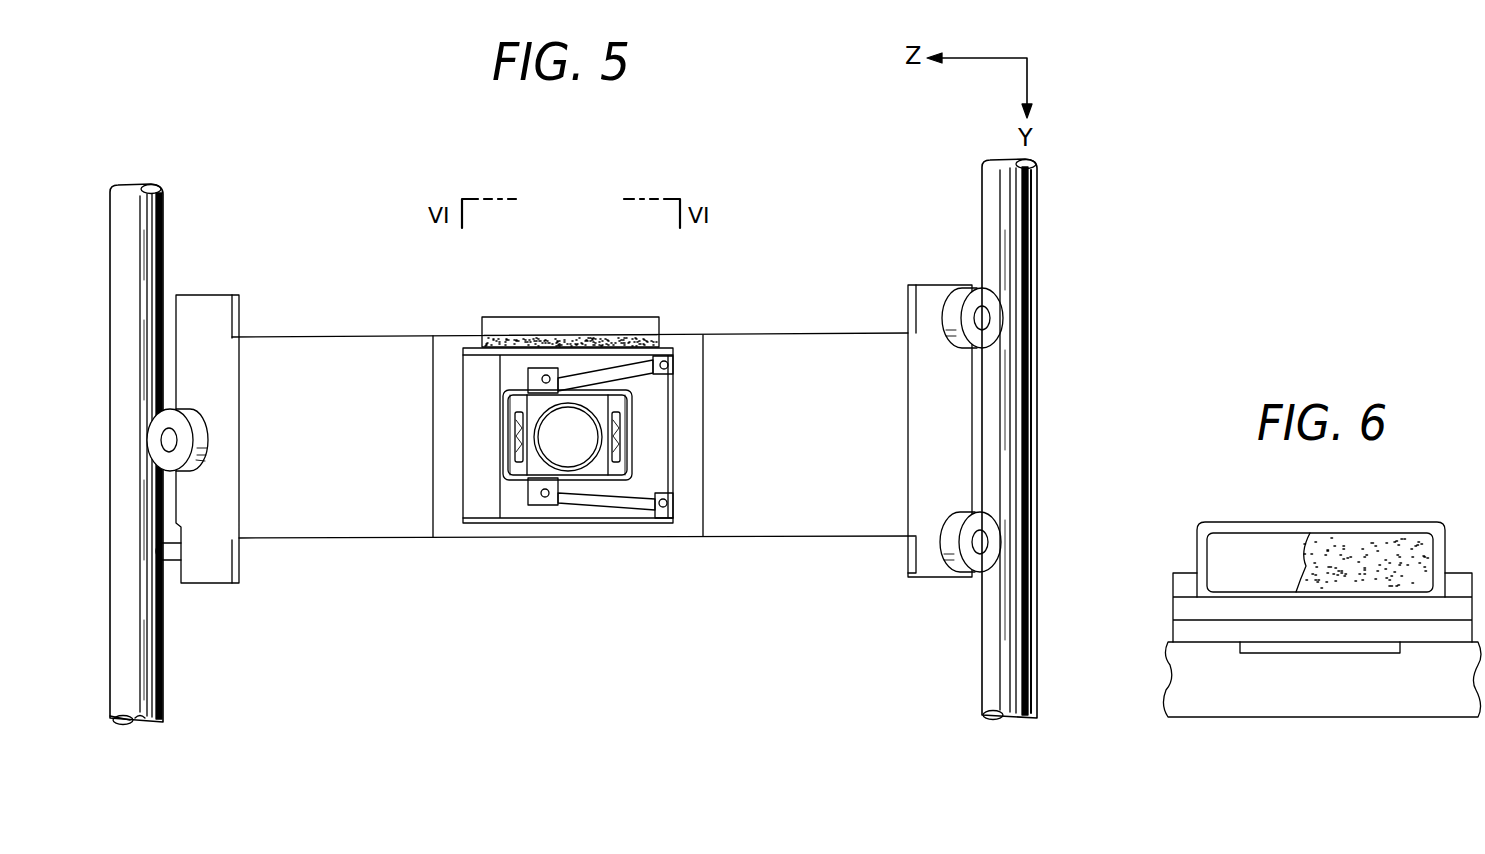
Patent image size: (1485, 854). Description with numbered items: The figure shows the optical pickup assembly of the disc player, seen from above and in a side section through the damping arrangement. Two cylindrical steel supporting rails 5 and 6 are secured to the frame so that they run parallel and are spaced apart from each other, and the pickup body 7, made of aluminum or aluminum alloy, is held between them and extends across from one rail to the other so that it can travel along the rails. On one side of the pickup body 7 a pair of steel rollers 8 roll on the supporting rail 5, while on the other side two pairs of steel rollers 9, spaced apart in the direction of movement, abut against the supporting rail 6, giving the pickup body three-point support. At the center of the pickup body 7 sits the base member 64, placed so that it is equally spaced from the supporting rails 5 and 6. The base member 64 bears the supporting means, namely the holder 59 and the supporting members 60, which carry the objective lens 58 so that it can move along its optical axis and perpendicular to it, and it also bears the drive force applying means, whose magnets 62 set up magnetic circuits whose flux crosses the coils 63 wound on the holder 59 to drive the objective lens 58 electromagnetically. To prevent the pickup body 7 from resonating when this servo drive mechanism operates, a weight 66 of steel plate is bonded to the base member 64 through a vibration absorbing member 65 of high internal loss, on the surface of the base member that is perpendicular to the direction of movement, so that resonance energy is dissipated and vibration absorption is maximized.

In FIG. 5, the supporting rail 5 is at (163, 265).
In FIG. 5, the supporting rail 6 is at (1037, 258).
In FIG. 5, the pickup body 7 is at (783, 332).
In FIG. 6, the pickup body 7 is at (1368, 718).
In FIG. 5, the steel rollers 8 is at (208, 439).
In FIG. 5, the steel rollers 9 is at (1000, 318).
In FIG. 5, the objective lens 58 is at (570, 410).
In FIG. 5, the holder 59 is at (600, 400).
In FIG. 5, the supporting members 60 is at (625, 372).
In FIG. 5, the magnets 62 is at (527, 393).
In FIG. 5, the coils 63 is at (523, 483).
In FIG. 5, the base member 64 is at (672, 393).
In FIG. 6, the base member 64 is at (1433, 527).
In FIG. 5, the vibration absorbing member 65 is at (488, 333).
In FIG. 6, the vibration absorbing member 65 is at (1390, 540).
In FIG. 5, the weight 66 is at (497, 328).
In FIG. 6, the weight 66 is at (1278, 545).